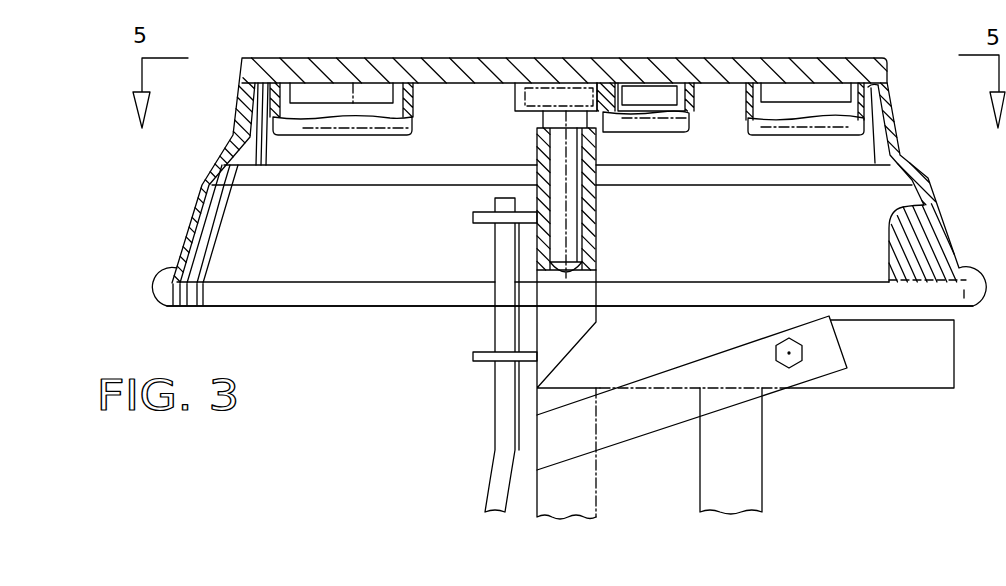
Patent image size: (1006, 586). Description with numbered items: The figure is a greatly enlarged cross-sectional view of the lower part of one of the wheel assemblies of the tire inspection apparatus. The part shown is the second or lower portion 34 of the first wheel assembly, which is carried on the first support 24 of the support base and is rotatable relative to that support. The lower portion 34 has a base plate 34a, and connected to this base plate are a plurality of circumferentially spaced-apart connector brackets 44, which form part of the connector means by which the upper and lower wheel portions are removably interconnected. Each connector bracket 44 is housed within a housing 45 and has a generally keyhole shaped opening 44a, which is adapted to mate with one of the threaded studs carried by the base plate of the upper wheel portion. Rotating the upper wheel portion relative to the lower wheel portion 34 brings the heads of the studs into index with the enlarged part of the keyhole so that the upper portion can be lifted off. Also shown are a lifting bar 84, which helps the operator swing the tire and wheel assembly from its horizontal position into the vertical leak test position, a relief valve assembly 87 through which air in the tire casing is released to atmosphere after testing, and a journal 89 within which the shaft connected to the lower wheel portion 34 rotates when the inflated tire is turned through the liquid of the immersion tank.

The first support 24 is at (762, 440).
The second or lower portion of the first wheel assembly 34 is at (935, 190).
The base plate of the second wheel portion 34a is at (712, 60).
The connector bracket 44 is at (353, 104).
The keyhole shaped opening 44a is at (305, 69).
The housing 45 is at (297, 135).
The lifting bar 84 is at (493, 433).
The relief valve assembly 87 is at (565, 212).
The journal 89 is at (597, 248).